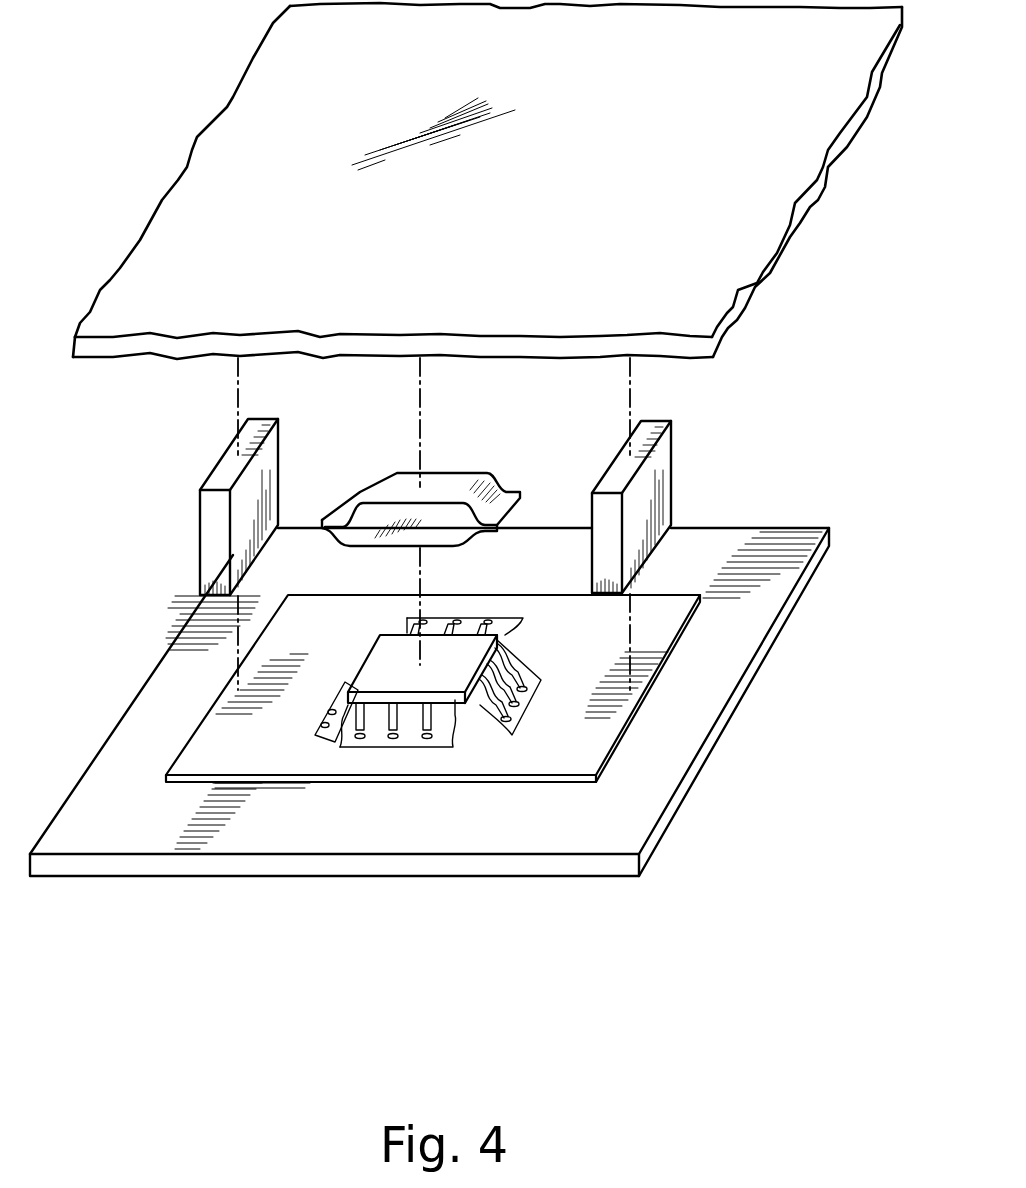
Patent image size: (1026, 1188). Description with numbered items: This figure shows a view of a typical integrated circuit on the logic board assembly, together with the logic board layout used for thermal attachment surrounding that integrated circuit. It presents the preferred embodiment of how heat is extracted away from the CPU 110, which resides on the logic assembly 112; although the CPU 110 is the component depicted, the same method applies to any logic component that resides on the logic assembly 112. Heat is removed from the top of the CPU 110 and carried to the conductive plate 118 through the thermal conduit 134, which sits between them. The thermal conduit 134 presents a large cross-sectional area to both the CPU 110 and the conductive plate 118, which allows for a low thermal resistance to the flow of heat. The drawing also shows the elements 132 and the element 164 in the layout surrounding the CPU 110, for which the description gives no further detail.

The conductive plate 118 is at (278, 68).
The support blocks 132 is at (202, 485).
The thermal conduit 134 is at (363, 532).
The CPU 110 is at (398, 647).
The inner plate / pad 164 is at (212, 744).
The logic assembly 112 is at (633, 817).